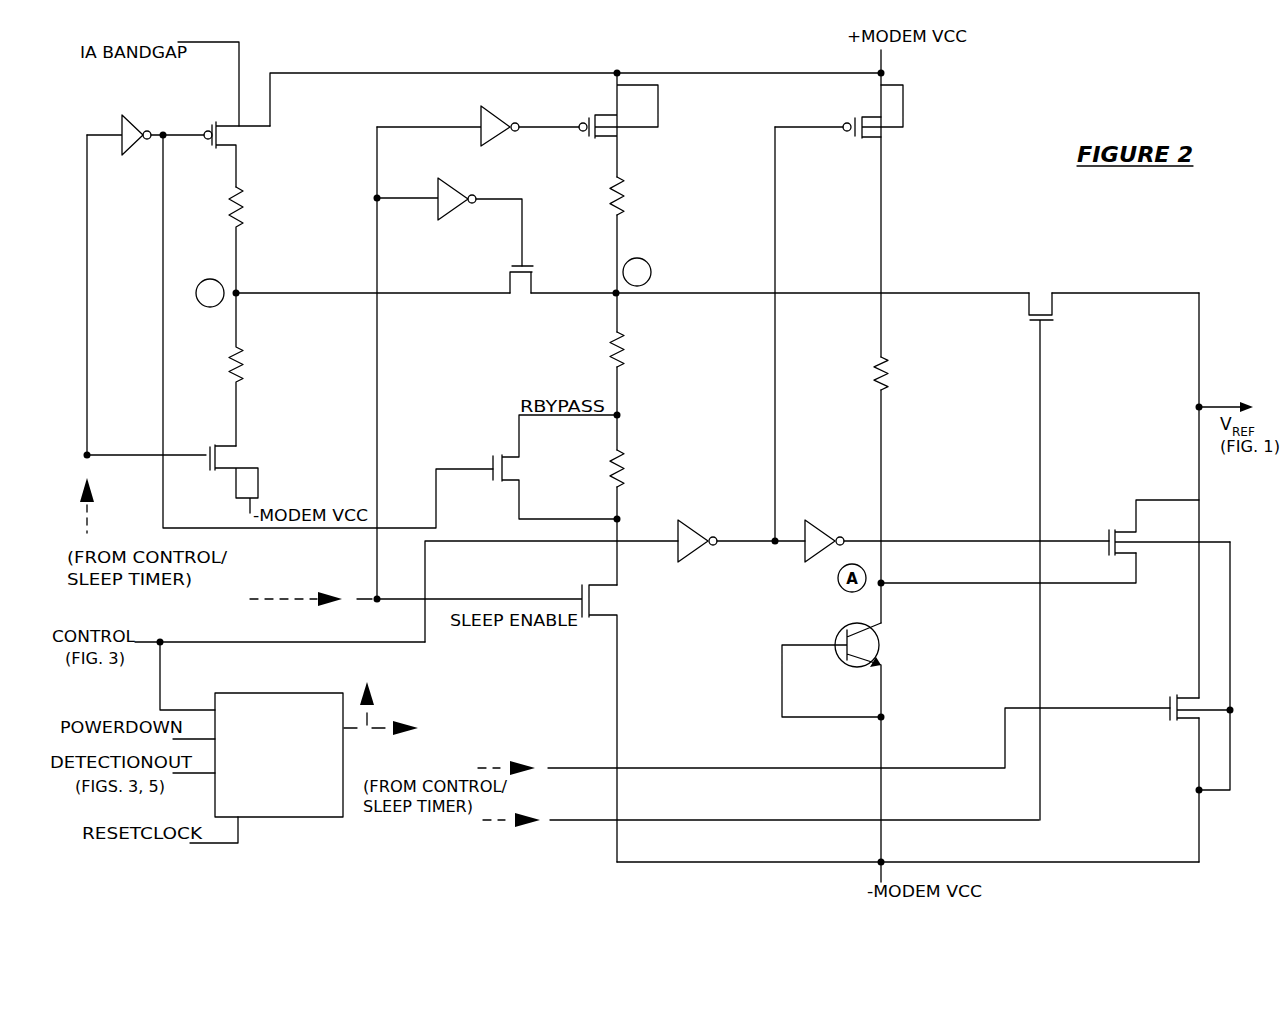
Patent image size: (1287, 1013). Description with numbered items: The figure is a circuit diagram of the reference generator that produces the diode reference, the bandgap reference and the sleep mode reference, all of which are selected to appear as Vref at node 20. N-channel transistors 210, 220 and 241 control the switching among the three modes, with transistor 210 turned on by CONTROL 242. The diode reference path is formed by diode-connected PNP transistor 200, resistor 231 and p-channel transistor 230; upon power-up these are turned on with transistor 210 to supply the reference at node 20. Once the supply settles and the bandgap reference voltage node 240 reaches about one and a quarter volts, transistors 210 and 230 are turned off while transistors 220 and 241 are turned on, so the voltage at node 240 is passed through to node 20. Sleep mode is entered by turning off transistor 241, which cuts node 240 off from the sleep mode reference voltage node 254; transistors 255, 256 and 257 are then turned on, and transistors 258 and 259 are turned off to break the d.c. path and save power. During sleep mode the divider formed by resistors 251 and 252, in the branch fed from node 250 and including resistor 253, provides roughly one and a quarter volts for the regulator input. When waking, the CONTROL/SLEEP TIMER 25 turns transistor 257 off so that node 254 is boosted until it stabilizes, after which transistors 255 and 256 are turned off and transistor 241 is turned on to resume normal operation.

The node 20 is at (1224, 403).
The CONTROL/SLEEP TIMER 25 is at (279, 755).
The diode-connected PNP transistor 200 is at (882, 648).
The n-channel transistor 210 is at (1120, 530).
The n-channel transistor 220 is at (1041, 288).
The p-channel transistor 230 is at (912, 117).
The resistor 231 is at (873, 368).
The bandgap reference voltage node 240 is at (268, 297).
The n-channel transistor 241 is at (510, 301).
The CONTROL 242 is at (138, 640).
The node 250 is at (610, 67).
The resistor 251 is at (648, 209).
The resistor 252 is at (632, 350).
The resistor 253 is at (634, 469).
The sleep mode reference voltage node 254 is at (613, 295).
The transistor 255 is at (633, 601).
The transistor 256 is at (650, 127).
The transistor 257 is at (503, 453).
The transistor 258 is at (252, 142).
The transistor 259 is at (249, 452).